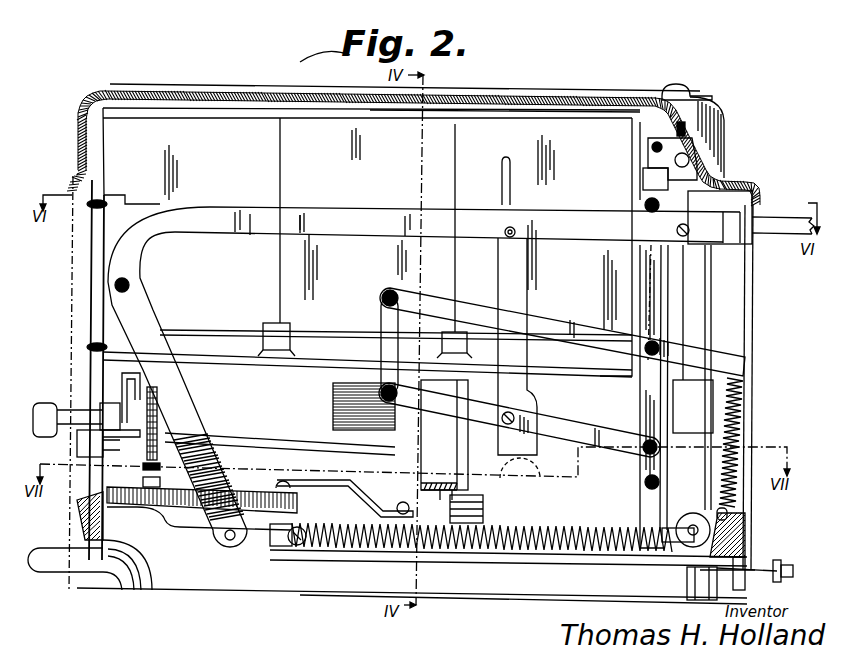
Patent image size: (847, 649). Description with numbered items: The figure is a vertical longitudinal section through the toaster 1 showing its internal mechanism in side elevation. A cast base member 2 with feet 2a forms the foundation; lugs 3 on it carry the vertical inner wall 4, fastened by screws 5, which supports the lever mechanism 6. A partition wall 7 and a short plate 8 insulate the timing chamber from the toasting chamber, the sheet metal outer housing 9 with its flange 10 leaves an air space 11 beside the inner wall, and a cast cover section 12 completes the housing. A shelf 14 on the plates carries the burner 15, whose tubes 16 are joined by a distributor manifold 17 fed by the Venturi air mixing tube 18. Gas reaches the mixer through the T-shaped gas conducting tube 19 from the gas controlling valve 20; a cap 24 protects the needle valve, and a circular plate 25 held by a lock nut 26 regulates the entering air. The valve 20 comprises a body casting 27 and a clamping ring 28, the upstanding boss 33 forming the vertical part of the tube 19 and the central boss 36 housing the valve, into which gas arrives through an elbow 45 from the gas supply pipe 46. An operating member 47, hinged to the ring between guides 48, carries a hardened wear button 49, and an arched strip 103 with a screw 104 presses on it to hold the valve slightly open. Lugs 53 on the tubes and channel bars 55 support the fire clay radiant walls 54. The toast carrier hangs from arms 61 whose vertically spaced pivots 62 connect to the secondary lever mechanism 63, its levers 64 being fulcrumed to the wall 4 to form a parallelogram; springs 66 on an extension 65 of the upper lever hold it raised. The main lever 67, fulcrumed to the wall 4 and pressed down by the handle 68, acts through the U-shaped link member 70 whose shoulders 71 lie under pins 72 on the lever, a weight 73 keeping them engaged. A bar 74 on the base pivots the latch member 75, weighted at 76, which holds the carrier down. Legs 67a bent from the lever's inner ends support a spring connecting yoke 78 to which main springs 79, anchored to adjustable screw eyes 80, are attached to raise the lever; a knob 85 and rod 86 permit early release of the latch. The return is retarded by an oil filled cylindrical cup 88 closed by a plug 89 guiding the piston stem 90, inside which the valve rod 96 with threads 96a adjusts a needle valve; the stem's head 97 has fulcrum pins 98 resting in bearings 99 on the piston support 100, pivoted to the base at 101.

The toaster 1 is at (200, 76).
The base member 2 is at (745, 535).
The feet 2a is at (140, 576).
The lugs 3 is at (692, 512).
The inner wall 4 is at (92, 280).
The screws 5 is at (80, 505).
The lever mechanism 6 is at (352, 242).
The partition wall 7 is at (640, 404).
The short plate 8 is at (106, 168).
The outer housing 9 is at (753, 312).
The flange 10 is at (728, 512).
The space 11 is at (80, 244).
The top or cover section 12 is at (80, 120).
The shelf 14 is at (120, 395).
The burner 15 is at (265, 370).
The tubes 16 is at (200, 368).
The distributor manifold 17 is at (333, 388).
The air mixing tube 18 is at (280, 434).
The gas conducting tube 19 is at (78, 448).
The gas controlling valve 20 is at (170, 508).
The cap 24 is at (44, 403).
The circular plate 25 is at (147, 447).
The lock nut 26 is at (140, 412).
The body casting 27 is at (293, 511).
The clamping ring 28 is at (297, 500).
The upstanding boss 33 is at (78, 472).
The central boss 36 is at (233, 545).
The elbow 45 is at (118, 552).
The gas supply pipe 46 is at (60, 558).
The operating member 47 is at (362, 494).
The guides 48 is at (283, 482).
The wear receiving button 49 is at (396, 502).
The lugs 53 is at (124, 292).
The radiant walls 54 is at (354, 162).
The channel bars 55 is at (376, 113).
The arms 61 is at (382, 352).
The pivots 62 is at (382, 298).
The secondary lever mechanism 63 is at (590, 325).
The levers 64 is at (585, 340).
The extension 65 is at (705, 352).
The springs 66 is at (742, 420).
The main lever 67 is at (398, 212).
The legs 67a is at (165, 333).
The handle 68 is at (790, 222).
The link member 70 is at (517, 306).
The shoulders 71 is at (508, 233).
The pins 72 is at (516, 232).
The weight 73 is at (520, 468).
The bar 74 is at (455, 445).
The latch member 75 is at (452, 500).
The weight 76 is at (483, 505).
The spring connecting yoke 78 is at (272, 546).
The main springs 79 is at (345, 548).
The screw eyes 80 is at (668, 545).
The knob 85 is at (783, 562).
The rod 86 is at (745, 585).
The cylindrical cup 88 is at (700, 268).
The plug 89 is at (700, 206).
The piston stem 90 is at (730, 182).
The valve rod 96 is at (677, 125).
The threads 96a is at (712, 124).
The head 97 is at (722, 140).
The fulcrum pins 98 is at (674, 160).
The bearings 99 is at (660, 180).
The piston support 100 is at (645, 258).
The pivot 101 is at (700, 512).
The strip of metal 103 is at (160, 480).
The screw 104 is at (143, 467).